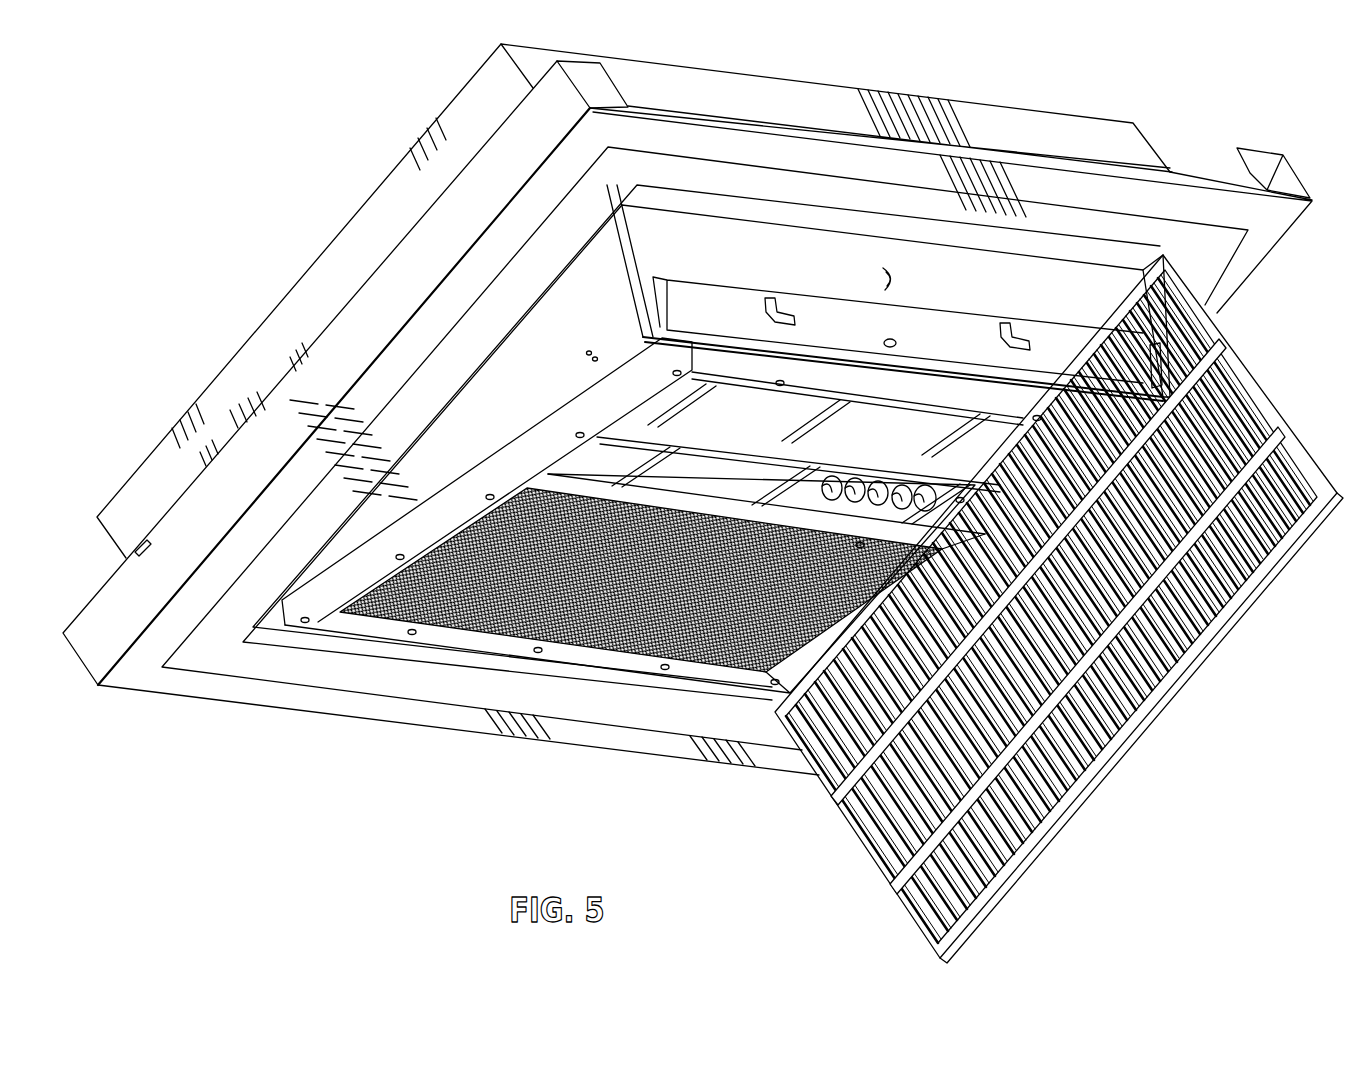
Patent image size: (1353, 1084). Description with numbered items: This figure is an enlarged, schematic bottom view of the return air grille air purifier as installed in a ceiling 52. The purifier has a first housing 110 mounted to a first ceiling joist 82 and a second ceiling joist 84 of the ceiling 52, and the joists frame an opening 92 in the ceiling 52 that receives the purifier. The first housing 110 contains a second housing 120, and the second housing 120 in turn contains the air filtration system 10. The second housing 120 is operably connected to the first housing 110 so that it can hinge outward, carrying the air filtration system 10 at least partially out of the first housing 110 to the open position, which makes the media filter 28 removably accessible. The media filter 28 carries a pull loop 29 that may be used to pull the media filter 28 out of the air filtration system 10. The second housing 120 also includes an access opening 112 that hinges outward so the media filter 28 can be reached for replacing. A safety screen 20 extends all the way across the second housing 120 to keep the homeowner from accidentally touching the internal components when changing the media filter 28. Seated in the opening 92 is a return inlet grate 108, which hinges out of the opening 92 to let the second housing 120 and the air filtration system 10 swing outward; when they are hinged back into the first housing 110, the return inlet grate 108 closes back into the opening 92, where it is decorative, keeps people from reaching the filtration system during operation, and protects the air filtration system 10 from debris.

The air filtration system 10 is at (727, 310).
The safety screen 20 is at (545, 632).
The media filter 28 is at (977, 287).
The pull loop 29 is at (880, 276).
The ceiling 52 is at (1257, 203).
The first ceiling joist 82 is at (385, 283).
The second ceiling joist 84 is at (1277, 167).
The opening 92 is at (371, 657).
The return inlet grate 108 is at (1165, 667).
The first housing 110 is at (1027, 135).
The access opening 112 is at (1147, 343).
The second housing 120 is at (593, 312).